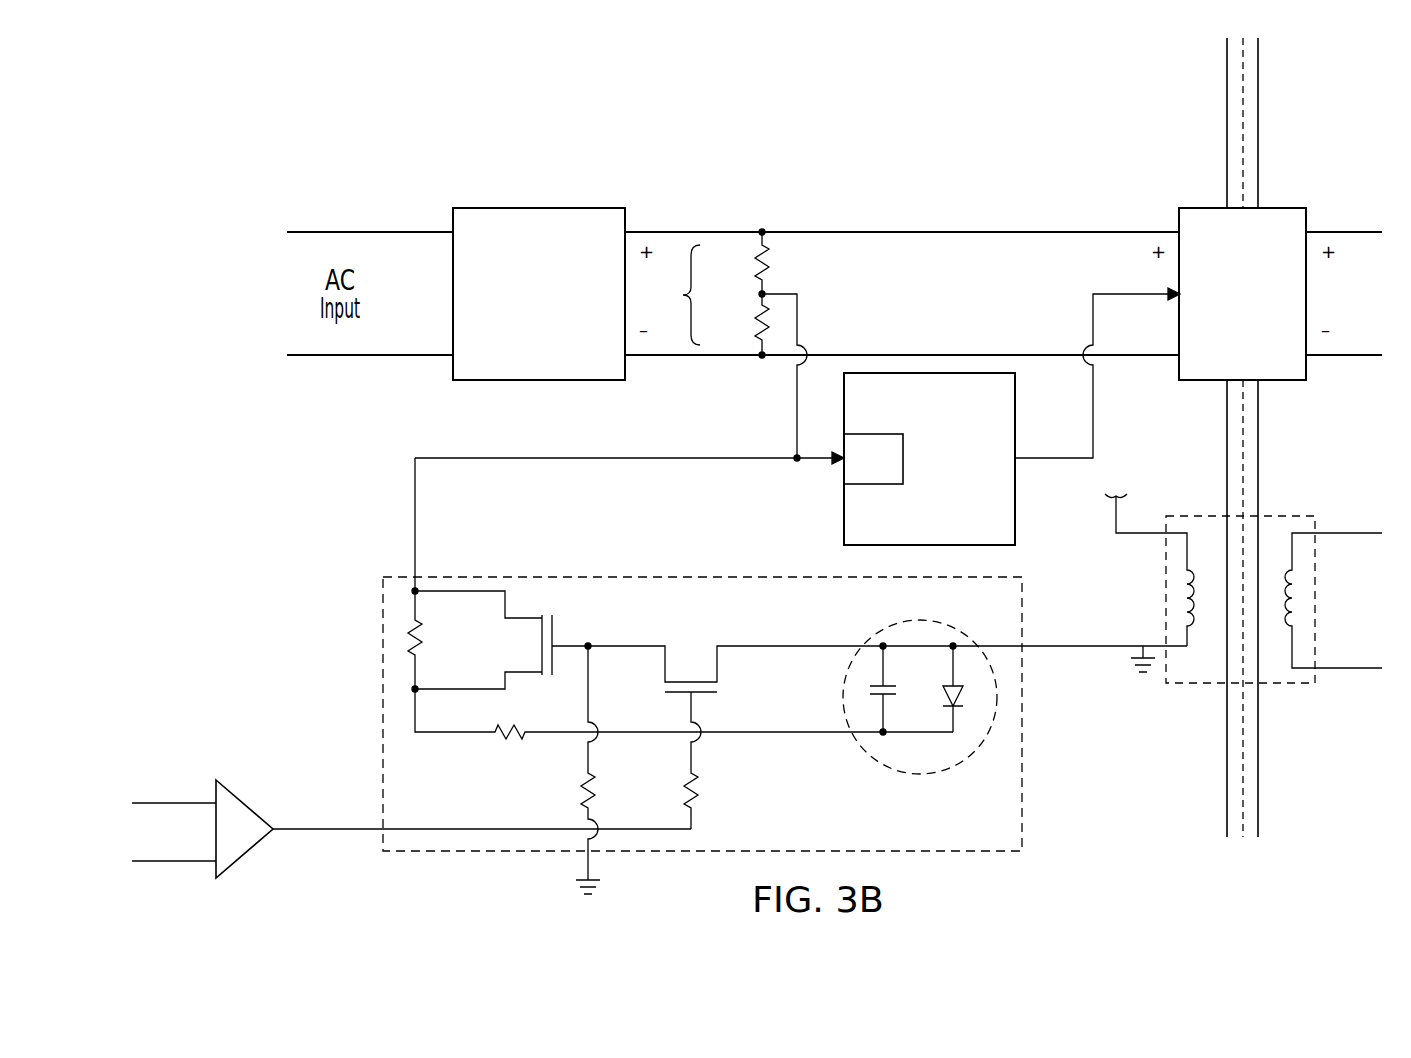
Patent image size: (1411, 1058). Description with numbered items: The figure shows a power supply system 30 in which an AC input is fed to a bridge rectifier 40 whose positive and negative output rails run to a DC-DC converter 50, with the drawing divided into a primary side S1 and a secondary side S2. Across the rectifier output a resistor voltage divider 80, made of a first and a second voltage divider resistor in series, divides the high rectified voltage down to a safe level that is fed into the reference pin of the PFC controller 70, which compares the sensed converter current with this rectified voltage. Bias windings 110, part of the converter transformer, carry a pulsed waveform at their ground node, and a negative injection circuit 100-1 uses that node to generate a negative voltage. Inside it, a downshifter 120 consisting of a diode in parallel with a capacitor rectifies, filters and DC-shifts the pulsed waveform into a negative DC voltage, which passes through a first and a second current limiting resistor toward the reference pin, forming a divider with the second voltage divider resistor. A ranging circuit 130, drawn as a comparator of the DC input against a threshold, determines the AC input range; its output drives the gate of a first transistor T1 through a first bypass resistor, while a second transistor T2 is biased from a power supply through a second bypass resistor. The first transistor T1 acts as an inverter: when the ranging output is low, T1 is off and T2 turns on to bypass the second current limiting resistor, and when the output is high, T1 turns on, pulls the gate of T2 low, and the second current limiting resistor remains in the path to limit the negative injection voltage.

The power supply system 30 is at (198, 167).
The rectifier 40 is at (553, 208).
The converter 50 is at (1276, 208).
The PFC controller 70 is at (844, 520).
The resistor voltage divider 80 is at (712, 293).
The bias windings 110 is at (1288, 516).
The downshifter 120 is at (896, 765).
The ranging circuit 130 is at (253, 805).
The negative injection circuit 100-1 is at (785, 735).
The primary side S1 is at (1160, 147).
The secondary side S2 is at (1340, 108).
The first transistor T1 is at (694, 670).
The second transistor T2 is at (542, 622).